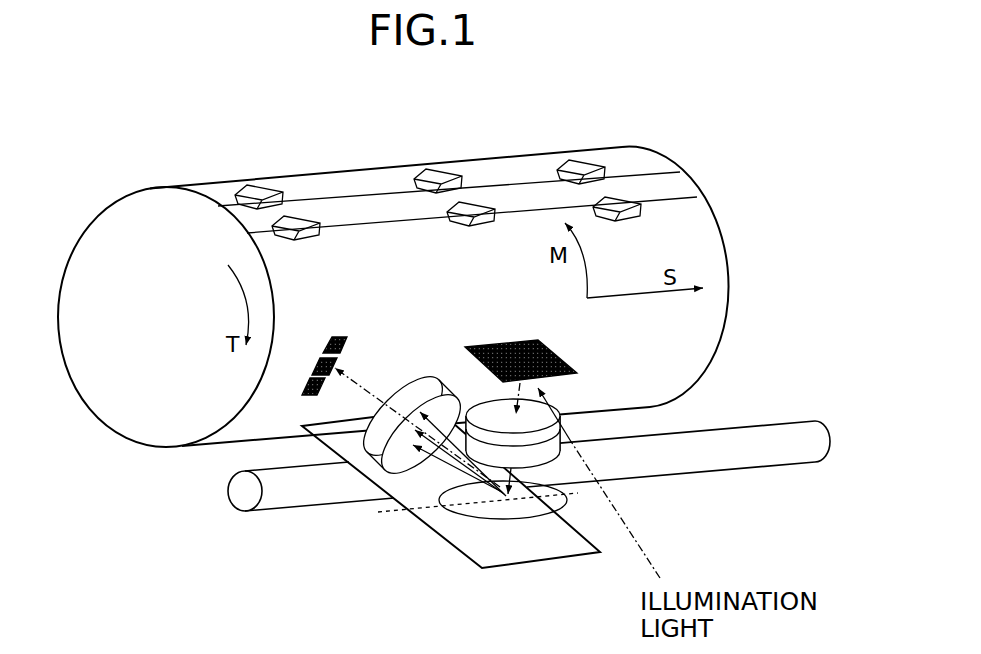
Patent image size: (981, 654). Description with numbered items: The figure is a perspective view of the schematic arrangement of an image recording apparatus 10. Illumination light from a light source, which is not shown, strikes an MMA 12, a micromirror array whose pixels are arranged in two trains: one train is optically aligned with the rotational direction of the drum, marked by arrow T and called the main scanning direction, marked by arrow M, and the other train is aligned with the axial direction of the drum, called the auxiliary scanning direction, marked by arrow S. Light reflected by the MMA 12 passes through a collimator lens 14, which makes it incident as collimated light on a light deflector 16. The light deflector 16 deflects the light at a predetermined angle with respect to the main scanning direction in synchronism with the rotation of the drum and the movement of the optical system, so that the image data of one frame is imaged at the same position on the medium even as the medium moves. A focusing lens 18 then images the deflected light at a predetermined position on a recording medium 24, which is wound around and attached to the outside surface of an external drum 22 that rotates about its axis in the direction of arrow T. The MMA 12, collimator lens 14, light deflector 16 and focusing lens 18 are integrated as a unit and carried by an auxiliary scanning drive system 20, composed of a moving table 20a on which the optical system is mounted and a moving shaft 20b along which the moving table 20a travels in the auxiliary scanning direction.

The image recording apparatus 10 is at (568, 107).
The MMA 12 is at (585, 372).
The collimator lens 14 is at (548, 453).
The light deflector 16 is at (489, 509).
The focusing lens 18 is at (396, 462).
The auxiliary scanning drive system 20 is at (322, 520).
The moving table 20a is at (468, 538).
The moving shaft 20b is at (275, 497).
The drum 22 is at (140, 237).
The recording medium 24 is at (357, 260).